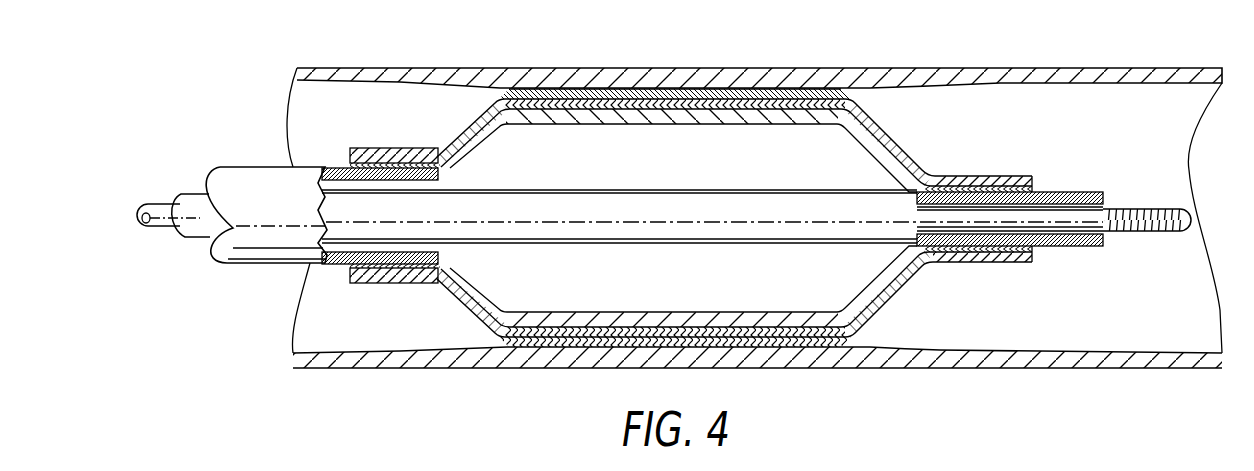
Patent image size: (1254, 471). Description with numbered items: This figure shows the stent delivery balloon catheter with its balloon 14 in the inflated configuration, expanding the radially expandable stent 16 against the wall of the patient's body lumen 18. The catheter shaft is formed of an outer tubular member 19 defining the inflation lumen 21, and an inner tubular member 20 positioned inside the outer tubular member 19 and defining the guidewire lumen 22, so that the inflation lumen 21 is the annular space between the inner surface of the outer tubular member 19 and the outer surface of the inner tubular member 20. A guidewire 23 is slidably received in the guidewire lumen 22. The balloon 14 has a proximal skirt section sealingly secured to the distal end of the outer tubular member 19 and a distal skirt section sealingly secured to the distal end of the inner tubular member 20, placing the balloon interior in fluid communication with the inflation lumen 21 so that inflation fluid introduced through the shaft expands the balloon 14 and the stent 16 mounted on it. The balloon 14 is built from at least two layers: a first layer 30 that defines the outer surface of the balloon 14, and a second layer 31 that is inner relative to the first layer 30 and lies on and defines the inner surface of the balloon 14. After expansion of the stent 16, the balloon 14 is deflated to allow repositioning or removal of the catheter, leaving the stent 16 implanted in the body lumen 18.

The balloon 14 is at (908, 127).
The radially expandable stent 16 is at (692, 92).
The body lumen 18 is at (1034, 86).
The outer tubular member 19 is at (253, 165).
The inner tubular member 20 is at (197, 193).
The inflation lumen 21 is at (377, 244).
The guidewire lumen 22 is at (1107, 233).
The guidewire 23 is at (153, 227).
The first layer 30 is at (467, 122).
The second layer 31 is at (477, 143).